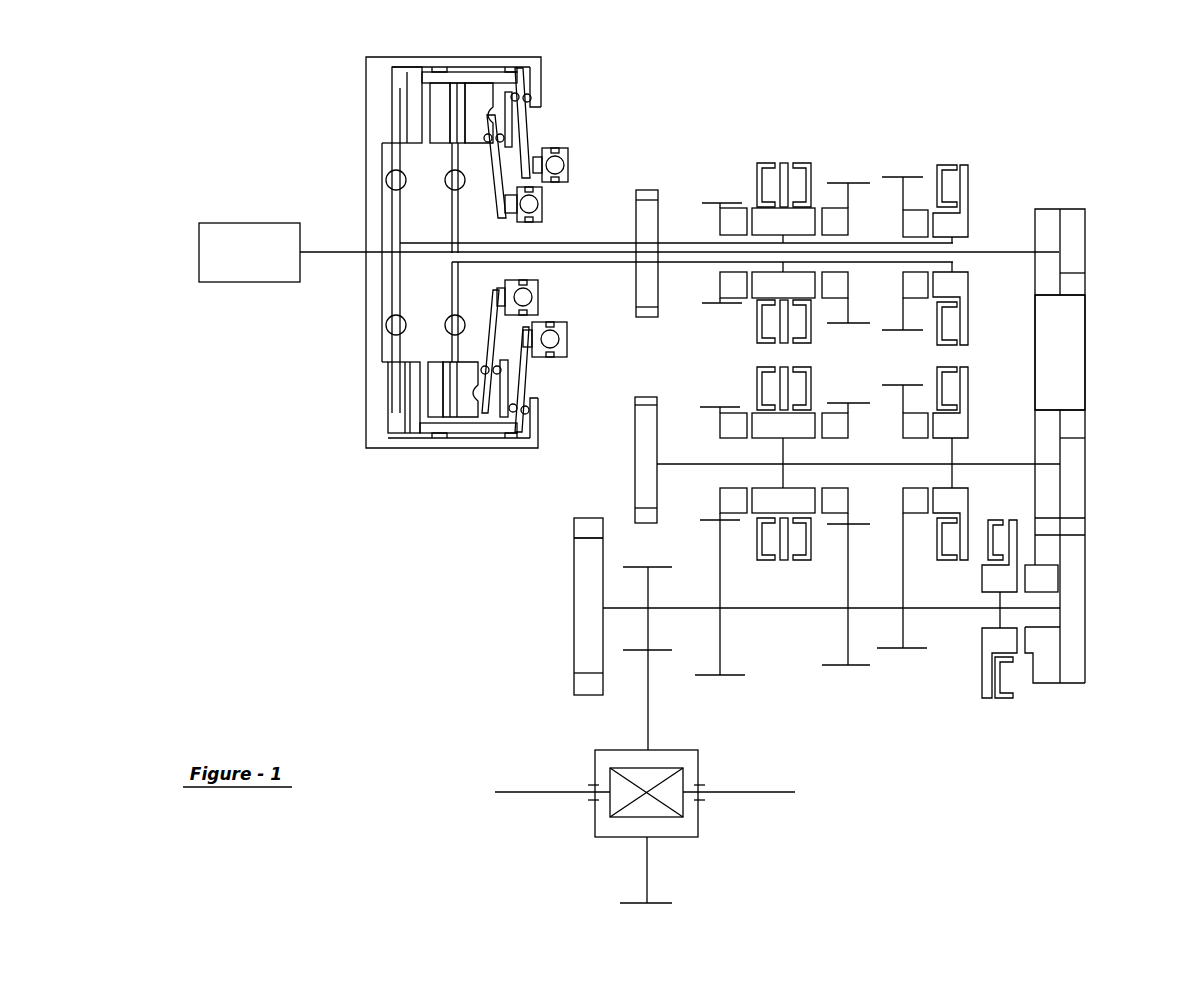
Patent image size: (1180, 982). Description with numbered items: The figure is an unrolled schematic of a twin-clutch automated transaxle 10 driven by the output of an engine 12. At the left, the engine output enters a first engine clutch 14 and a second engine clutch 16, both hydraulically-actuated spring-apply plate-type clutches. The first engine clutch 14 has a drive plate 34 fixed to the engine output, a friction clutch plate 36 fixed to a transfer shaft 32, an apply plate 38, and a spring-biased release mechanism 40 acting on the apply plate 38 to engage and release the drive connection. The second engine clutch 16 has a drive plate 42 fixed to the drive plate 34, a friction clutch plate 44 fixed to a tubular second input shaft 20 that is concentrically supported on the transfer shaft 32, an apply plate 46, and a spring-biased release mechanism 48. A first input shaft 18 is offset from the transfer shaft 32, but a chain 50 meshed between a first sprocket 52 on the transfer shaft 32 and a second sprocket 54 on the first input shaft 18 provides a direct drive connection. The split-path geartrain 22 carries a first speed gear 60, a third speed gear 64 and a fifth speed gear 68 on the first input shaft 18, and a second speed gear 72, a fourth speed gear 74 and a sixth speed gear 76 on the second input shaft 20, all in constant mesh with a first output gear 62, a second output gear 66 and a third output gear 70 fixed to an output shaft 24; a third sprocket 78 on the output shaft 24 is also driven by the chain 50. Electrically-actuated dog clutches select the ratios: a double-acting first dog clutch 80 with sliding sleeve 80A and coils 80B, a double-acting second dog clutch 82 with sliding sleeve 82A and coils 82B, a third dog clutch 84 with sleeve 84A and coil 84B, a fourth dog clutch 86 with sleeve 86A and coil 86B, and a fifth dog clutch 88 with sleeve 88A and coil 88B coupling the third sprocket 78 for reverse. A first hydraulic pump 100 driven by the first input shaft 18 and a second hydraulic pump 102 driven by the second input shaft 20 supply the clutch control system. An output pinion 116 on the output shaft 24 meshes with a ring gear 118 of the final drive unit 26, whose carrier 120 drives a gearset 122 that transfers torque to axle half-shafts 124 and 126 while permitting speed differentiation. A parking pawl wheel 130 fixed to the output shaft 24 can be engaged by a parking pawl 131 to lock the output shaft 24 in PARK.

The transaxle 10 is at (678, 106).
The engine 12 is at (227, 233).
The first engine clutch 14 is at (386, 402).
The second engine clutch 16 is at (450, 289).
The first input shaft 18 is at (978, 464).
The second input shaft 20 is at (560, 243).
The split-path geartrain 22 is at (987, 201).
The output shaft 24 is at (777, 610).
The final drive unit 26 is at (640, 830).
The transfer shaft 32 is at (1000, 252).
The drive plate 34 is at (372, 160).
The friction clutch plate 36 is at (398, 216).
The apply plate 38 is at (412, 72).
The spring-biased release mechanism 40 is at (534, 125).
The drive plate 42 is at (437, 410).
The friction clutch plate 44 is at (456, 220).
The apply plate 46 is at (468, 378).
The spring-biased release mechanism 48 is at (542, 295).
The chain 50 is at (1075, 355).
The first sprocket 52 is at (1070, 272).
The second sprocket 54 is at (1065, 438).
The first speed gear 60 is at (712, 406).
The first output gear 62 is at (720, 655).
The third speed gear 64 is at (830, 402).
The second output gear 66 is at (848, 580).
The fifth speed gear 68 is at (885, 383).
The third output gear 70 is at (888, 650).
The second speed gear 72 is at (712, 202).
The fourth speed gear 74 is at (843, 183).
The sixth speed gear 76 is at (892, 177).
The third sprocket 78 is at (1045, 685).
The first dog clutch 80 is at (747, 540).
The sliding sleeve 80A is at (790, 500).
The coil 80B is at (762, 561).
The second dog clutch 82 is at (786, 150).
The sliding sleeve 82A is at (768, 288).
The coil 82B is at (748, 144).
The third dog clutch 84 is at (977, 402).
The sliding sleeve 84A is at (960, 496).
The coil 84B is at (957, 562).
The fourth dog clutch 86 is at (951, 156).
The sliding sleeve 86A is at (957, 290).
The coil 86B is at (934, 177).
The fifth dog clutch 88 is at (1000, 708).
The sliding sleeve 88A is at (983, 663).
The coil 88B is at (1020, 712).
The first hydraulic pump 100 is at (645, 432).
The second hydraulic pump 102 is at (645, 285).
The output pinion 116 is at (628, 565).
The ring gear 118 is at (657, 903).
The carrier 120 is at (675, 837).
The gearset 122 is at (623, 798).
The axle half-shaft 124 is at (770, 792).
The axle half-shaft 126 is at (520, 792).
The parking pawl wheel 130 is at (585, 583).
The parking pawl 131 is at (587, 528).